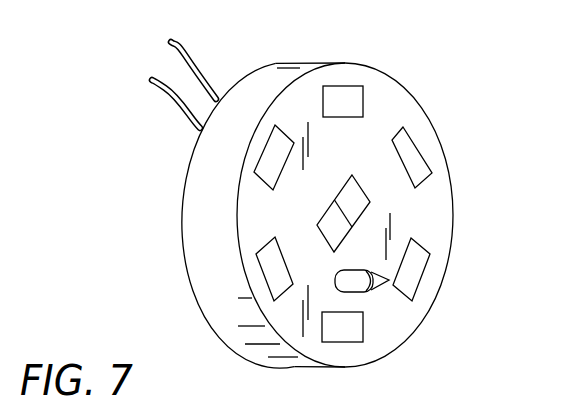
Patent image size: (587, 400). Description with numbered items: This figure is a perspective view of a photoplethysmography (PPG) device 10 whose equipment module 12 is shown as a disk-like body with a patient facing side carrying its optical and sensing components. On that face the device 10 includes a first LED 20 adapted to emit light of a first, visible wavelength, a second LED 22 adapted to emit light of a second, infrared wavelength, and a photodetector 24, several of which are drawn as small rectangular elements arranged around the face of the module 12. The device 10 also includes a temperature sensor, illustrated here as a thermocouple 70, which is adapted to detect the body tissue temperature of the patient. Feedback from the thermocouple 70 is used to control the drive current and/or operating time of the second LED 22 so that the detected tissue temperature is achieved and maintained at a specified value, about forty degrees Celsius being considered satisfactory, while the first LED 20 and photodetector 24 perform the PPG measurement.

The photoplethysmography (PPG) device 10 is at (344, 198).
The equipment module 12 is at (243, 100).
The first LED 20 is at (322, 222).
The second LED 22 is at (355, 203).
The photodetector 24 is at (337, 100).
The thermocouple 70 is at (389, 280).